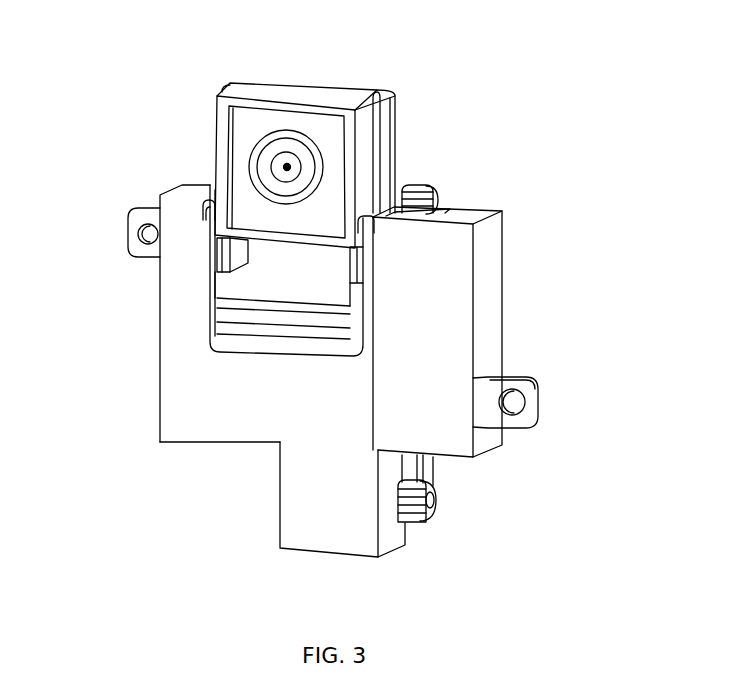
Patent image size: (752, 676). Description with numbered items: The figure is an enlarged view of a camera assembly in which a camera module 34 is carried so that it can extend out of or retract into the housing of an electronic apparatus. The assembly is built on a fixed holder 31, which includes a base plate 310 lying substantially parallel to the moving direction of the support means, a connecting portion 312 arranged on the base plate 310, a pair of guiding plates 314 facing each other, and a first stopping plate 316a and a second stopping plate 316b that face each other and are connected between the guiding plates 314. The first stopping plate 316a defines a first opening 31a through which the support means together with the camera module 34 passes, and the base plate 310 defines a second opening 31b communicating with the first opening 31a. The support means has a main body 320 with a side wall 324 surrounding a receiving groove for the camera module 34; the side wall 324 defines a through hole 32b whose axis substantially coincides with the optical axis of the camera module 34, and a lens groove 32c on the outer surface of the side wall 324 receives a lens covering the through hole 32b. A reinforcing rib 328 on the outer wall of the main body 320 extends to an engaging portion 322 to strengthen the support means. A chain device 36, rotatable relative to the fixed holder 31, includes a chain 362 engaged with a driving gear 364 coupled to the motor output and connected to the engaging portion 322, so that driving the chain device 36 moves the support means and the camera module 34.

The fixed holder 31 is at (158, 373).
The first opening 31a is at (373, 215).
The second opening 31b is at (295, 282).
The base plate 310 is at (450, 315).
The connecting portion 312 is at (522, 417).
The guiding plates 314 is at (493, 257).
The first stopping plate 316a is at (478, 213).
The second stopping plate 316b is at (232, 447).
The main body 320 is at (218, 100).
The engaging portion 322 is at (242, 259).
The side wall 324 is at (220, 182).
The reinforcing rib 328 is at (380, 137).
The through hole 32b is at (303, 157).
The lens groove 32c is at (245, 140).
The camera module 34 is at (288, 165).
The chain device 36 is at (459, 529).
The chain 362 is at (428, 470).
The driving gear 364 is at (437, 500).